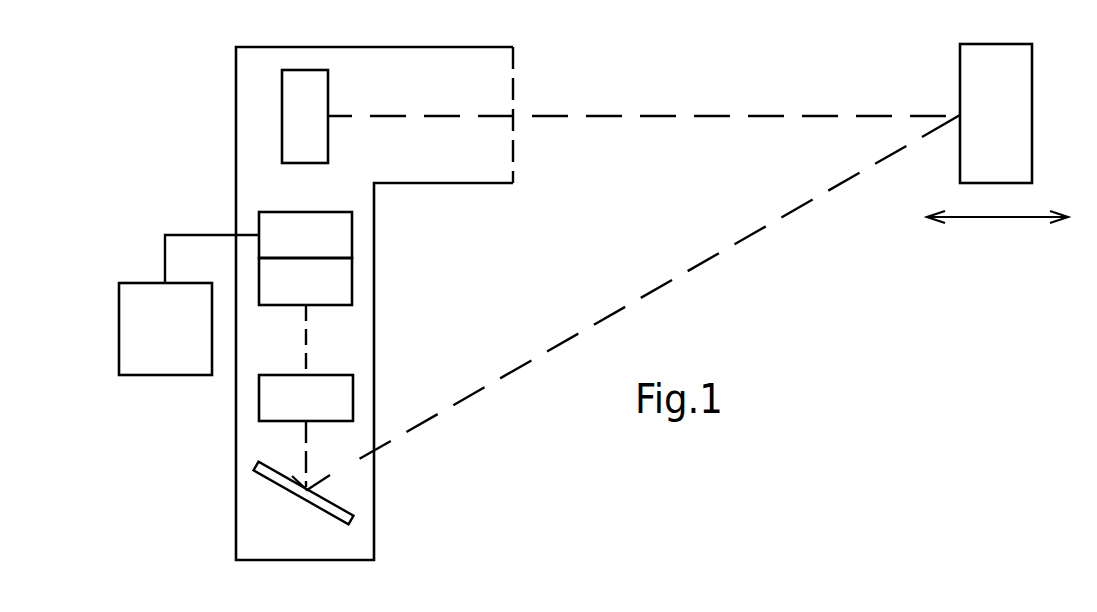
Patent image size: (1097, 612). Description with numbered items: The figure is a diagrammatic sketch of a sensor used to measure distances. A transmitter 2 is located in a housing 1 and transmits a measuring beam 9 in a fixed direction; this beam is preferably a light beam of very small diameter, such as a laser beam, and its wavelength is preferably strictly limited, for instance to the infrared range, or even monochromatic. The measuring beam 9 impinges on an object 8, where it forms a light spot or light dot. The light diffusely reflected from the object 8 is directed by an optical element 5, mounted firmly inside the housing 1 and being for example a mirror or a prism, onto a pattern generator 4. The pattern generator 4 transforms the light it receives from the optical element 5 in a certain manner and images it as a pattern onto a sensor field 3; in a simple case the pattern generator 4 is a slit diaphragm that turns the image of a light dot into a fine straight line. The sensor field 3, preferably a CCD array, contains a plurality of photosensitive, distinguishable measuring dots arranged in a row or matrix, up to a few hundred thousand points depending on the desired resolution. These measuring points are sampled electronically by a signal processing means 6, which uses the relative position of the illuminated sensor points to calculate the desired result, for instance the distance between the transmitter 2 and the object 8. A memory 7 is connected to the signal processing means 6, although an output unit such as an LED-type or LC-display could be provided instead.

The housing 1 is at (495, 86).
The transmitter 2 is at (308, 86).
The sensor field 3 is at (342, 272).
The pattern generator 4 is at (270, 385).
The optical element 5 is at (280, 488).
The signal processing means 6 is at (338, 222).
The memory 7 is at (142, 298).
The object 8 is at (1018, 100).
The measuring beam 9 is at (749, 115).